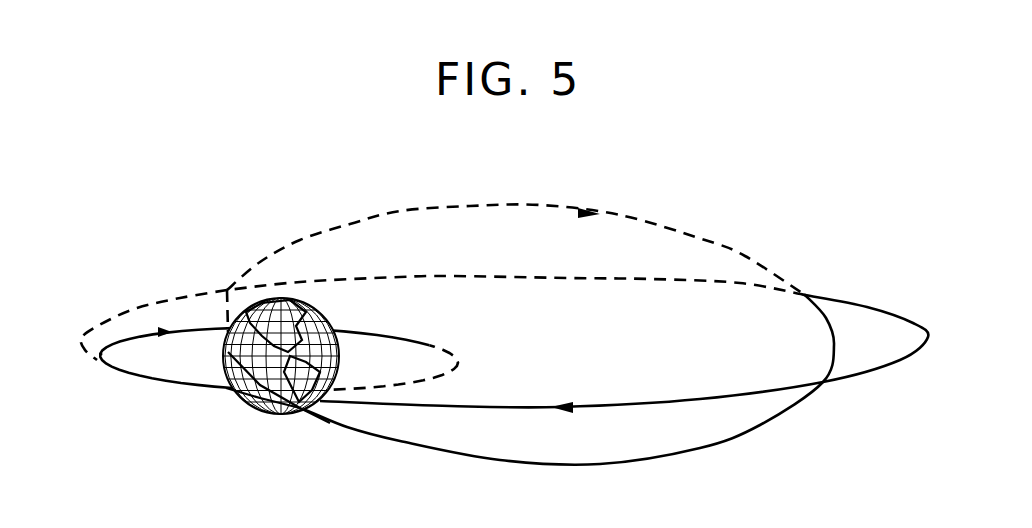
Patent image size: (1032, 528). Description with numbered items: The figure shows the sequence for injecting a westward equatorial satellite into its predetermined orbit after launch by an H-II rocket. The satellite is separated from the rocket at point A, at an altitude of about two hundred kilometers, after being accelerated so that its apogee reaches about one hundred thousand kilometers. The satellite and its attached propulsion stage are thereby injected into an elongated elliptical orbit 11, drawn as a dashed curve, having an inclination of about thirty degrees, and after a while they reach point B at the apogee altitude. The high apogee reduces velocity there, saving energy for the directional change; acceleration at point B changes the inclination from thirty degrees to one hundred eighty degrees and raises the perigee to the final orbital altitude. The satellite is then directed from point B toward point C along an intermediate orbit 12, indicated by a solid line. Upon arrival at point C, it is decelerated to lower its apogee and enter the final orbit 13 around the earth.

The elongated elliptical orbit 11 is at (531, 206).
The intermediate orbit 12 is at (728, 398).
The final orbit 13 is at (129, 332).
The point A is at (228, 342).
The point B is at (808, 293).
The point C is at (105, 358).